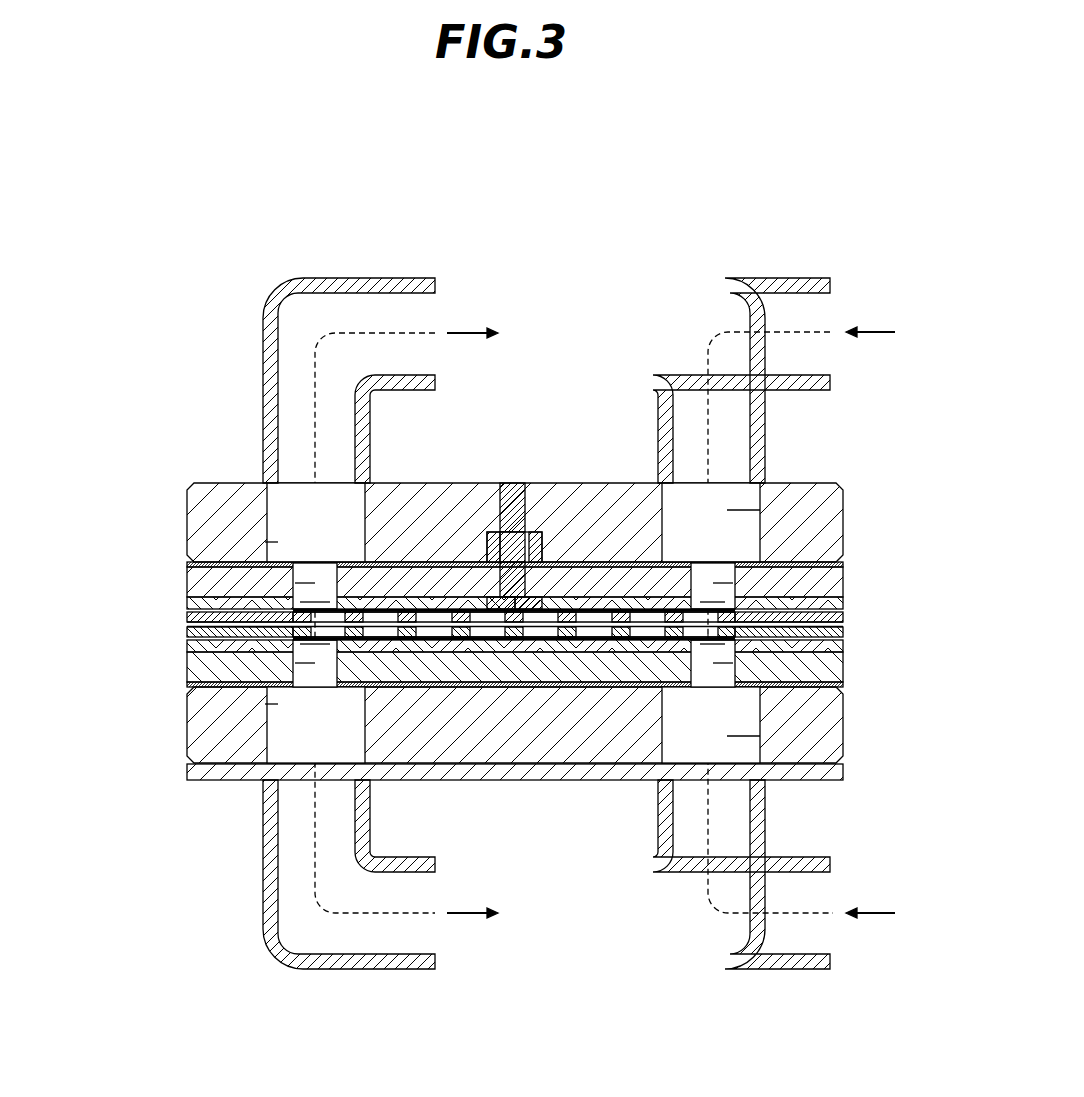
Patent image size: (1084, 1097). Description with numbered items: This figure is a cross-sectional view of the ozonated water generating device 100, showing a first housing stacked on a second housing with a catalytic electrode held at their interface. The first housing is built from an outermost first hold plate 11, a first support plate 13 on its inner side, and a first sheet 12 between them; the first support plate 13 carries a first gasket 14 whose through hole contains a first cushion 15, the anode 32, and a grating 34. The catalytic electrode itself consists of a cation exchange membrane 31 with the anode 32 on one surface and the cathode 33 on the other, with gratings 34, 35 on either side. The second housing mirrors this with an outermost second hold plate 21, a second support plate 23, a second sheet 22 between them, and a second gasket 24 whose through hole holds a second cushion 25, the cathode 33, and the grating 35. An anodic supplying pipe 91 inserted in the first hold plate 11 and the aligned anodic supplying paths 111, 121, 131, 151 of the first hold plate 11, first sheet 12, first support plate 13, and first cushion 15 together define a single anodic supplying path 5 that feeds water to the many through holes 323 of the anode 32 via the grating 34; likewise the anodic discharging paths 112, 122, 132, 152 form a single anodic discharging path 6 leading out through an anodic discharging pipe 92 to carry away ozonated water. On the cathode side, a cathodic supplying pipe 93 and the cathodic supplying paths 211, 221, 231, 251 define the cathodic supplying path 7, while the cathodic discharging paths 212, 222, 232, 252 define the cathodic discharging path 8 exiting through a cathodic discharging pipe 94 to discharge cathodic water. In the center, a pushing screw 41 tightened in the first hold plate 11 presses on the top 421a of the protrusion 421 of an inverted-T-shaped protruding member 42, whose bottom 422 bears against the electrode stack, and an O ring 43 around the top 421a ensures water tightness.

The ozonated water generating device 100 is at (486, 178).
The anodic supplying path 5 is at (685, 231).
The anodic discharging path 6 is at (280, 231).
The cathodic supplying path 7 is at (672, 980).
The cathodic discharging path 8 is at (310, 996).
The first hold plate 11 is at (183, 517).
The first sheet 12 is at (183, 562).
The first support plate 13 is at (183, 583).
The first gasket 14 is at (183, 603).
The first cushion 15 is at (598, 597).
The second hold plate 21 is at (183, 728).
The second sheet 22 is at (183, 686).
The second support plate 23 is at (183, 666).
The second gasket 24 is at (183, 636).
The second cushion 25 is at (183, 647).
The cation exchange membrane 31 is at (183, 624).
The anode 32 is at (738, 616).
The cathode 33 is at (738, 628).
The grating 34 is at (738, 605).
The grating 35 is at (738, 640).
The pushing screw 41 is at (508, 492).
The protruding member 42 is at (587, 836).
The O ring 43 is at (494, 530).
The protrusion 421 is at (552, 612).
The top of the protrusion 421a is at (537, 612).
The bottom 422 is at (536, 605).
The anodic supplying pipe 91 is at (775, 279).
The anodic discharging pipe 92 is at (378, 279).
The cathodic supplying pipe 93 is at (778, 968).
The cathodic discharging pipe 94 is at (380, 969).
The anodic supplying path 111 is at (727, 510).
The anodic discharging path 112 is at (278, 542).
The anodic supplying path 121 is at (713, 583).
The anodic discharging path 122 is at (315, 583).
The anodic supplying path 131 is at (709, 602).
The anodic discharging path 132 is at (320, 602).
The anodic supplying path 151 is at (690, 609).
The anodic discharging path 152 is at (338, 609).
The cathodic supplying path 211 is at (727, 736).
The cathodic discharging path 212 is at (278, 704).
The cathodic supplying path 221 is at (713, 663).
The cathodic discharging path 222 is at (315, 663).
The cathodic supplying path 231 is at (709, 644).
The cathodic discharging path 232 is at (320, 644).
The cathodic supplying path 251 is at (690, 640).
The cathodic discharging path 252 is at (338, 640).
The through holes 323 is at (648, 615).